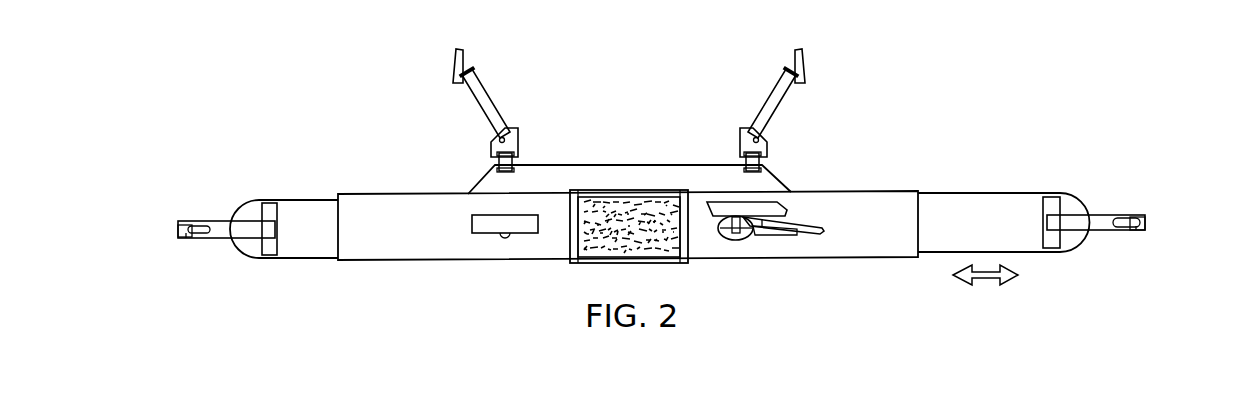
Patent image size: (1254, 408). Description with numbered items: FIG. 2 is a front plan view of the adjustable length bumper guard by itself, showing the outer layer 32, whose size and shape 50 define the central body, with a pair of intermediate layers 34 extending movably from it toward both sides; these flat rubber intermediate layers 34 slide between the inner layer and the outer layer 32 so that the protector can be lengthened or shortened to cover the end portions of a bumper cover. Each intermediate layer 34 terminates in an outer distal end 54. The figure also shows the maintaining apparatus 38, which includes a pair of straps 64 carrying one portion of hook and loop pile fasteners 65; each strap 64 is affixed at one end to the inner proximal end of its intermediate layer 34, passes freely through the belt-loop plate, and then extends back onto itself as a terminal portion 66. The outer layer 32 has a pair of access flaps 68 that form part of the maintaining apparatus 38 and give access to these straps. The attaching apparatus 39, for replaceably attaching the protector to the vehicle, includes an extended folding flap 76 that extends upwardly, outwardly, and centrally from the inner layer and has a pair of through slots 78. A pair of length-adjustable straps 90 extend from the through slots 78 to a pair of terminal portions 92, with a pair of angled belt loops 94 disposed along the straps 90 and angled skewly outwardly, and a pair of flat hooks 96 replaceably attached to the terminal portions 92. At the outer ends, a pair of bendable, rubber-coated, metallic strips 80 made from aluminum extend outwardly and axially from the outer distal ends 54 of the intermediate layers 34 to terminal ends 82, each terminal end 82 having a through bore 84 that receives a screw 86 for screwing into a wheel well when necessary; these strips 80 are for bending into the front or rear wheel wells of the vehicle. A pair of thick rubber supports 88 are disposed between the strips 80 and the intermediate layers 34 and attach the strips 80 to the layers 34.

The outer layer 32 is at (625, 191).
The size and shape of outer layer 50 is at (382, 197).
The intermediate layer 34 is at (311, 205).
The maintaining apparatus 38 is at (740, 248).
The attaching apparatus 39 is at (217, 242).
The outer distal end 54 is at (662, 169).
The strap 64 is at (823, 229).
The hook and loop pile fasteners 65 is at (762, 224).
The terminal portion 66 is at (797, 229).
The access flap 68 is at (489, 228).
The extended folding flap 76 is at (655, 168).
The through slot 78 is at (497, 166).
The bendable, rubber-coated, and metallic strip 80 is at (666, 164).
The terminal end 82 is at (178, 233).
The through bore 84 is at (188, 238).
The screw 86 is at (188, 221).
The support 88 is at (258, 200).
The strap 90 is at (629, 72).
The terminal portion 92 is at (629, 72).
The angled belt loop 94 is at (485, 97).
The flat hook 96 is at (461, 50).